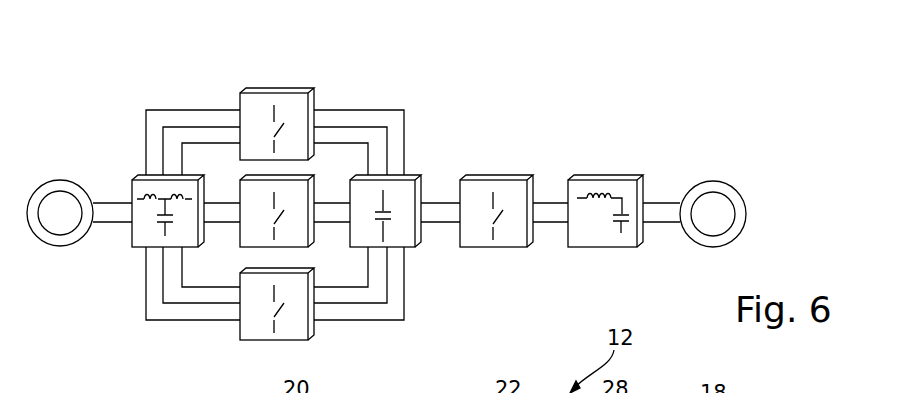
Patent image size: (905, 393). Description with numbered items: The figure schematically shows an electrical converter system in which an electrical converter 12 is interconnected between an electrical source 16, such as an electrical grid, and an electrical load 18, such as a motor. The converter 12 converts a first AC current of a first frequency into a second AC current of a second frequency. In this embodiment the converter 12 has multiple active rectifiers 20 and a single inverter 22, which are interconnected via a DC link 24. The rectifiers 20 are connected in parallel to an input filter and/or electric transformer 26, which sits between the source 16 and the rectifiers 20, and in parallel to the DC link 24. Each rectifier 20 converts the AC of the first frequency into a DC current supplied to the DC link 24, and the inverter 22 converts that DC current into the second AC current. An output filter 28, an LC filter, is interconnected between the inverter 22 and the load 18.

The electrical converter 12 is at (600, 105).
The electrical source 16 is at (62, 247).
The electrical load 18 is at (710, 183).
The active rectifier 20 is at (293, 88).
The inverter 22 is at (508, 176).
The DC link 24 is at (412, 176).
The input filter and/or transformer 26 is at (138, 247).
The output filter 28 is at (617, 176).